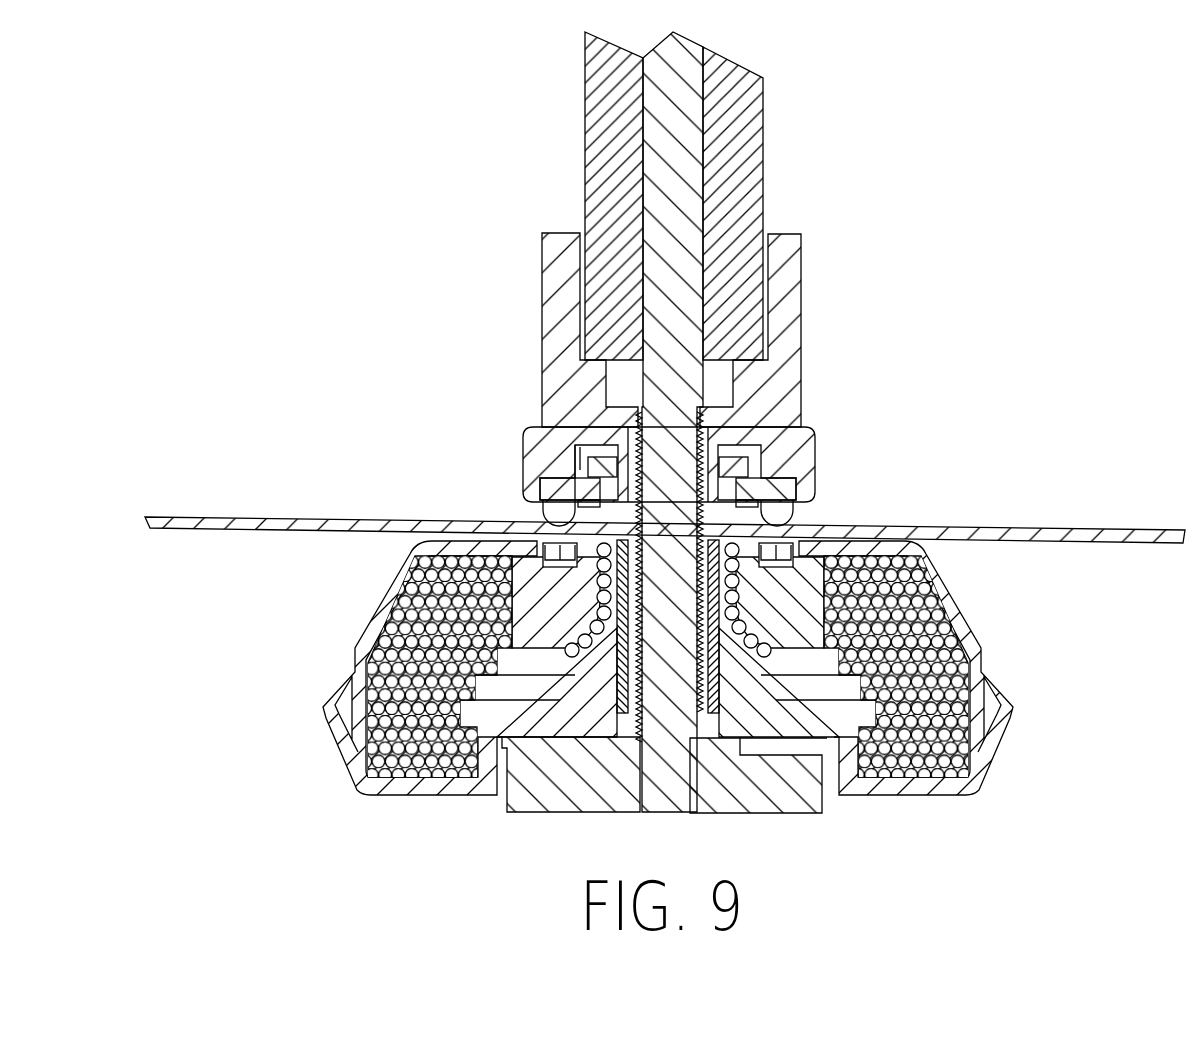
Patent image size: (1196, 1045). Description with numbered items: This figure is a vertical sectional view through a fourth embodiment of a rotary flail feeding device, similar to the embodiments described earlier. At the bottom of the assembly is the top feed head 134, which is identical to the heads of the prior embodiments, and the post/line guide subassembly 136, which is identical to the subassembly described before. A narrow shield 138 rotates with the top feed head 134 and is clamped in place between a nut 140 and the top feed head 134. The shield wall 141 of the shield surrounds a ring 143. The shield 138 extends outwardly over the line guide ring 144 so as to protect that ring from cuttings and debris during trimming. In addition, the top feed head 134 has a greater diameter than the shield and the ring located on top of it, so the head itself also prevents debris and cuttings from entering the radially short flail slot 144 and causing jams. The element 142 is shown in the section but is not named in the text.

The top feed head 134 is at (280, 665).
The post/line guide subassembly 136 is at (611, 696).
The narrow shield 138 is at (813, 455).
The nut 140 is at (760, 425).
The shield wall 141 is at (522, 487).
The shaft 142 is at (715, 382).
The ring 143 is at (545, 517).
The line guide ring 144 is at (790, 525).